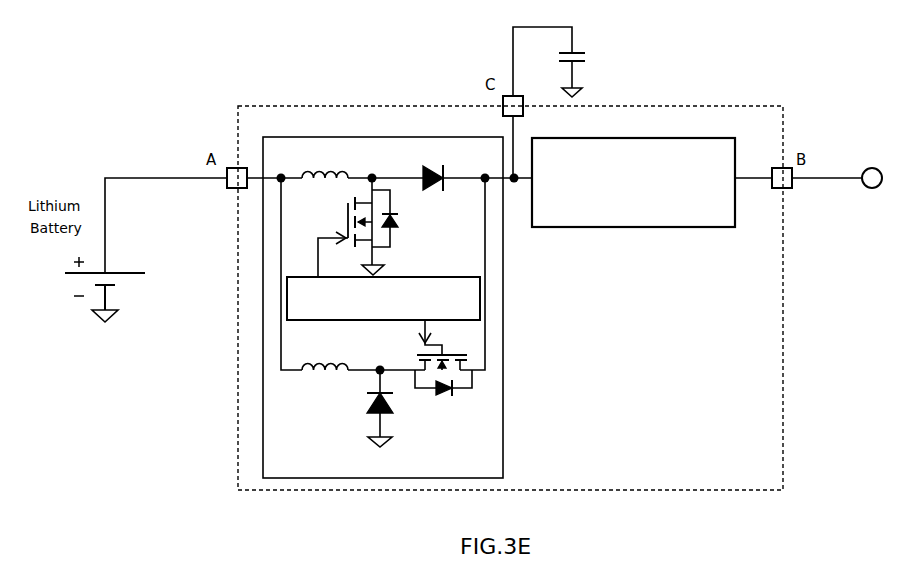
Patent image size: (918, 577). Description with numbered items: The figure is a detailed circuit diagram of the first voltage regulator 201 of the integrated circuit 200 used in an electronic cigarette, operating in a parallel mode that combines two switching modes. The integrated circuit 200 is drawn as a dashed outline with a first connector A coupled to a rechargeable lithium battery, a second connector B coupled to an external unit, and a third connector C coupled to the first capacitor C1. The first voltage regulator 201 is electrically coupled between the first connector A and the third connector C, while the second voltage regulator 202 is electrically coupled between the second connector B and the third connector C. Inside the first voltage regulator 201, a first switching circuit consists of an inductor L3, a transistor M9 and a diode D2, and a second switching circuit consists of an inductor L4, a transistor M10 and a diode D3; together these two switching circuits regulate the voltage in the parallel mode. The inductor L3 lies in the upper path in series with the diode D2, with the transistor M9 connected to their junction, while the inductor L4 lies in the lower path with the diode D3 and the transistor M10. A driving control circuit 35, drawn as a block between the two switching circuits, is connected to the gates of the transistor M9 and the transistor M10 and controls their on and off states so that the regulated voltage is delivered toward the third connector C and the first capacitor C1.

The integrated circuit 200 is at (668, 106).
The first voltage regulator 201 is at (378, 137).
The second voltage regulator 202 is at (598, 138).
The driving control circuit 35 is at (417, 277).
The inductor L3 is at (325, 161).
The inductor L4 is at (325, 357).
The diode D2 is at (434, 169).
The diode D3 is at (366, 408).
The transistor M9 is at (355, 227).
The transistor M10 is at (445, 358).
The first capacitor C1 is at (564, 62).